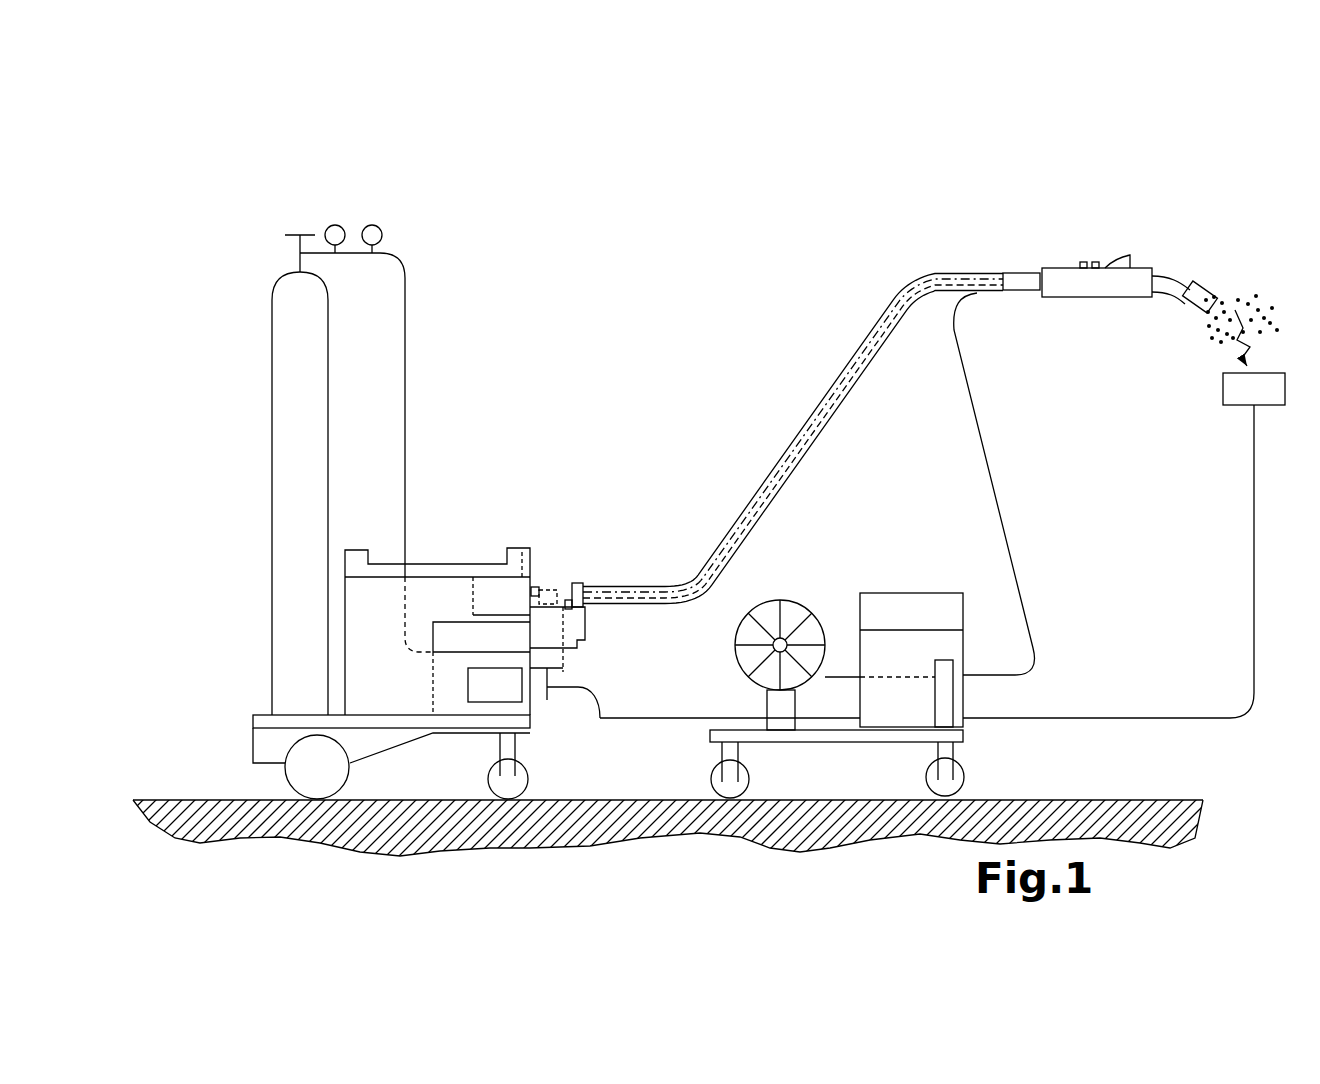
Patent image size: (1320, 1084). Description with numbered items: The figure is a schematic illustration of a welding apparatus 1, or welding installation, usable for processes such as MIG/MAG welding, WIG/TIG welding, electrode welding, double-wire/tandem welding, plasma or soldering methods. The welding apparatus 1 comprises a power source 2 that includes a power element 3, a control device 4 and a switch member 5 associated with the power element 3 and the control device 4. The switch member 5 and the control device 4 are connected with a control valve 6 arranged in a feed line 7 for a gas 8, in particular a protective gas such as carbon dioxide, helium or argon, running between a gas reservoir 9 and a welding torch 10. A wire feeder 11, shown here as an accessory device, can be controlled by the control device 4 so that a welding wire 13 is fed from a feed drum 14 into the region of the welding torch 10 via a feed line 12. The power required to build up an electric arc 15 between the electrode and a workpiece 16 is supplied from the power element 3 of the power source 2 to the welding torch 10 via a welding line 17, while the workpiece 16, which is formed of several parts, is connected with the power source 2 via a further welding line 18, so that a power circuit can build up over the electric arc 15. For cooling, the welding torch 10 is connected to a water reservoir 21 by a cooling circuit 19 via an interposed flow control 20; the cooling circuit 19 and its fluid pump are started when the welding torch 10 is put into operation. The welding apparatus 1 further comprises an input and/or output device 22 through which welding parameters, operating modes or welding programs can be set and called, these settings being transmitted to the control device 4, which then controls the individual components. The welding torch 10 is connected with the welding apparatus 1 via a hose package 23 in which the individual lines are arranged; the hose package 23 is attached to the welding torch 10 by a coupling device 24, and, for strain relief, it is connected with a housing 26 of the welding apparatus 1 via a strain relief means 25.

The welding apparatus 1 is at (200, 222).
The power source 2 is at (485, 430).
The power element 3 is at (487, 692).
The control device 4 is at (428, 680).
The switch member 5 is at (549, 724).
The control valve 6 is at (540, 662).
The feed line 7 is at (937, 292).
The gas 8 is at (1226, 266).
The gas reservoir 9 is at (298, 347).
The welding torch 10 is at (1143, 240).
The wire feeder 11 is at (1015, 764).
The feed line 12 is at (1010, 517).
The welding wire 13 is at (1236, 308).
The feed drum 14 is at (787, 600).
The electric arc 15 is at (1222, 359).
The workpiece 16 is at (1262, 390).
The welding line 17 is at (860, 338).
The further welding line 18 is at (1259, 586).
The cooling circuit 19 is at (726, 515).
The flow control 20 is at (533, 592).
The water reservoir 21 is at (492, 588).
The input and/or output device 22 is at (525, 563).
The hose package 23 is at (635, 587).
The coupling device 24 is at (1020, 272).
The strain relief means 25 is at (576, 593).
The housing 26 is at (579, 618).